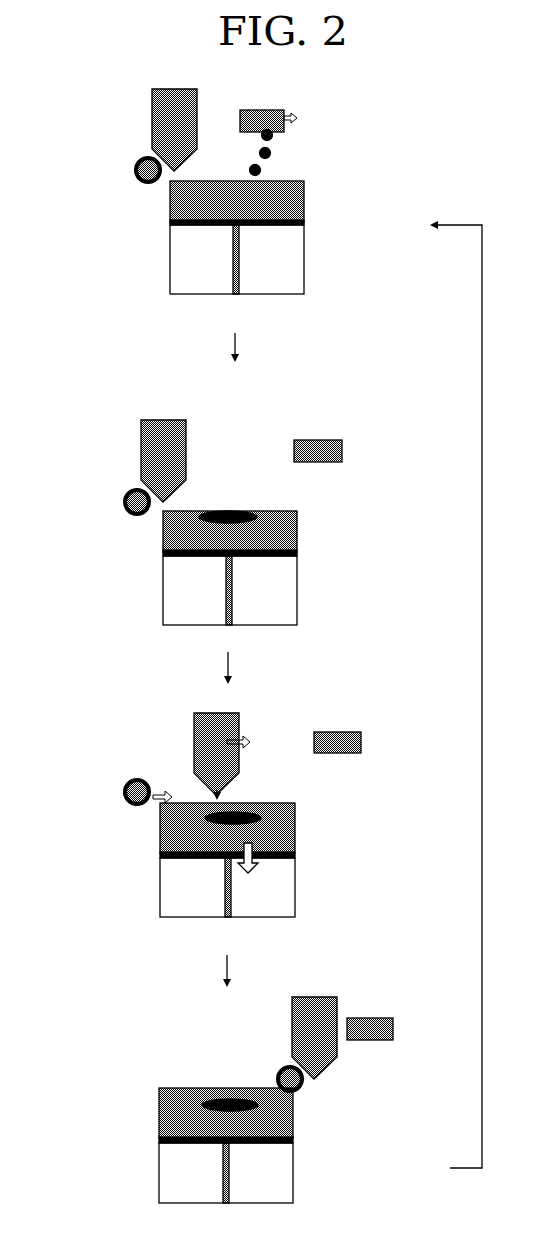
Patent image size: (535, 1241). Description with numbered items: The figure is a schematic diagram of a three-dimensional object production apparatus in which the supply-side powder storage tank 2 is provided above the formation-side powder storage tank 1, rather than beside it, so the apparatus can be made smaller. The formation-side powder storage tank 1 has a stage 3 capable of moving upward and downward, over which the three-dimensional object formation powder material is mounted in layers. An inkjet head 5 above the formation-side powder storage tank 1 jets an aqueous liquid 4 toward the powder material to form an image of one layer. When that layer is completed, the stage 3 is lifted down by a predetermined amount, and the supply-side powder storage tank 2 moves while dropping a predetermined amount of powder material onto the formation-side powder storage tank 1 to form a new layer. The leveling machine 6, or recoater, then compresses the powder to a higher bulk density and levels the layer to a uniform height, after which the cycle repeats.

The formation-side powder storage tank 1 is at (293, 198).
The supply-side powder storage tank 2 is at (160, 120).
The stage 3 is at (233, 227).
The aqueous liquid 4 is at (273, 156).
The inkjet head 5 is at (258, 112).
The leveling machine 6 is at (138, 178).